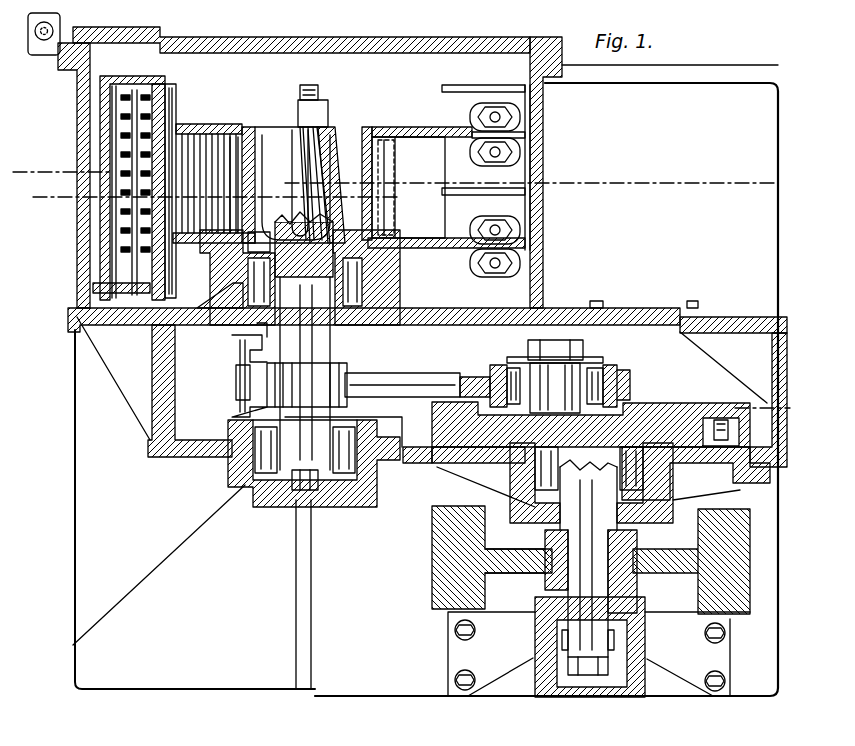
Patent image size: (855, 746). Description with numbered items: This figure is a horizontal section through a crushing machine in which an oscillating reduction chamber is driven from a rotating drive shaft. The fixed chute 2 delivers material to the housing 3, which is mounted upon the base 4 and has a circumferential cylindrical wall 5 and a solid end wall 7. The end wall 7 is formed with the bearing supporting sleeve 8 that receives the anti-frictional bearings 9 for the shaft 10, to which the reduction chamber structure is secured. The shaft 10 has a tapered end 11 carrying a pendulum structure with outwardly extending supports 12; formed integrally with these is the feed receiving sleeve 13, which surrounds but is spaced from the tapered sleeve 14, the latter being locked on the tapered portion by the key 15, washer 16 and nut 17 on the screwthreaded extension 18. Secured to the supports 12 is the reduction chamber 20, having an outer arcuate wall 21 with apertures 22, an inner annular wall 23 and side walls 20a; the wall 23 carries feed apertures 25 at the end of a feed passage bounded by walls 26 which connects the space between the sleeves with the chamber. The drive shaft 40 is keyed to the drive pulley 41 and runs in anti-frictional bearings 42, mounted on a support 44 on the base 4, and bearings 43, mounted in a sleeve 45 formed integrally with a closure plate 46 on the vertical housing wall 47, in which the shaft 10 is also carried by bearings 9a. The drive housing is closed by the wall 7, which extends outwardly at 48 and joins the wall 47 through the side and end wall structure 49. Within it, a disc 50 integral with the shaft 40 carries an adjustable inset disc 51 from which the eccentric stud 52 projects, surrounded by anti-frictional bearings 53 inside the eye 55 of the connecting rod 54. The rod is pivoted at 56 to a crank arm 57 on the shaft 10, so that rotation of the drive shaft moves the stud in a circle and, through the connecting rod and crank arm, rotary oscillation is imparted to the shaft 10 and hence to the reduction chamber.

The fixed chute 2 is at (39, 202).
The housing 3 is at (12, 190).
The base 4 is at (745, 95).
The circumferential cylindrical wall 5 is at (76, 83).
The solid end wall 7 is at (125, 318).
The bearing supporting sleeve 8 is at (233, 288).
The anti-frictional bearings 9 is at (250, 283).
The bearings 9a is at (263, 453).
The shaft 10 is at (318, 337).
The tapered end 11 is at (386, 200).
The yoke or supports 12 is at (198, 92).
The feed receiving sleeve or stirrup 13 is at (252, 130).
The tapered sleeve 14 is at (335, 148).
The key 15 is at (305, 130).
The washer 16 is at (333, 125).
The nut 17 is at (318, 100).
The screwthreaded extension 18 is at (308, 85).
The reduction chamber 20 is at (108, 140).
The side walls 20a is at (120, 92).
The outer arcuate wall 21 is at (100, 100).
The apertures 22 is at (145, 95).
The inner annular wall 23 is at (160, 100).
The feed apertures 25 is at (386, 170).
The feed passage walls 26 is at (232, 138).
The drive shaft 40 is at (580, 572).
The drive pulley 41 is at (432, 544).
The anti-frictional bearings 42 is at (555, 637).
The anti-frictional bearings 43 is at (547, 475).
The support 44 is at (508, 666).
The sleeve 45 is at (670, 480).
The closure plate 46 is at (462, 458).
The vertical housing wall 47 is at (197, 450).
The outward extension of wall 48 is at (723, 320).
The side and end wall structure 49 is at (775, 373).
The disc 50 is at (700, 440).
The inner inset disc 51 is at (657, 417).
The eccentric stud 52 is at (552, 340).
The anti-frictional bearings 53 is at (613, 370).
The connecting rod 54 is at (408, 382).
The eye 55 is at (498, 377).
The pivot 56 is at (233, 385).
The crank arm 57 is at (338, 372).